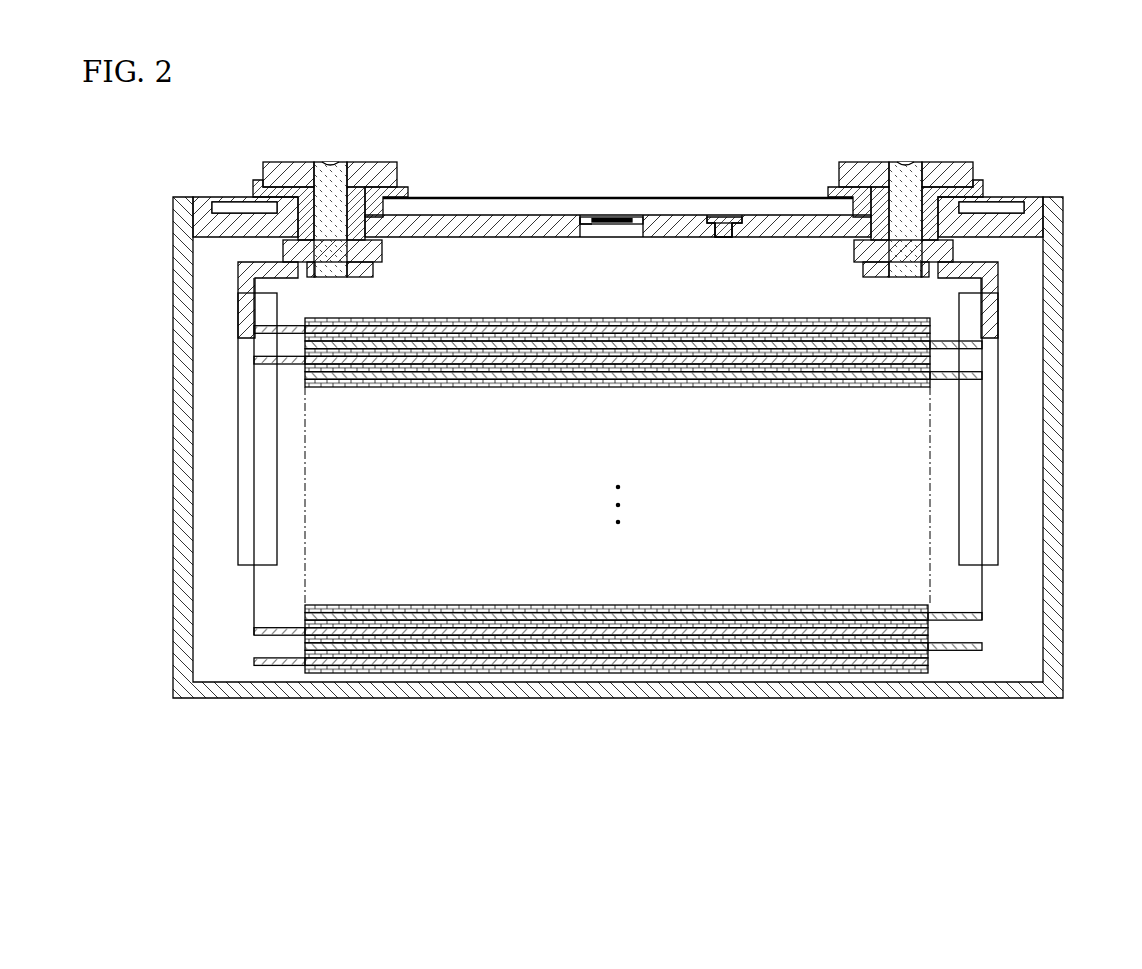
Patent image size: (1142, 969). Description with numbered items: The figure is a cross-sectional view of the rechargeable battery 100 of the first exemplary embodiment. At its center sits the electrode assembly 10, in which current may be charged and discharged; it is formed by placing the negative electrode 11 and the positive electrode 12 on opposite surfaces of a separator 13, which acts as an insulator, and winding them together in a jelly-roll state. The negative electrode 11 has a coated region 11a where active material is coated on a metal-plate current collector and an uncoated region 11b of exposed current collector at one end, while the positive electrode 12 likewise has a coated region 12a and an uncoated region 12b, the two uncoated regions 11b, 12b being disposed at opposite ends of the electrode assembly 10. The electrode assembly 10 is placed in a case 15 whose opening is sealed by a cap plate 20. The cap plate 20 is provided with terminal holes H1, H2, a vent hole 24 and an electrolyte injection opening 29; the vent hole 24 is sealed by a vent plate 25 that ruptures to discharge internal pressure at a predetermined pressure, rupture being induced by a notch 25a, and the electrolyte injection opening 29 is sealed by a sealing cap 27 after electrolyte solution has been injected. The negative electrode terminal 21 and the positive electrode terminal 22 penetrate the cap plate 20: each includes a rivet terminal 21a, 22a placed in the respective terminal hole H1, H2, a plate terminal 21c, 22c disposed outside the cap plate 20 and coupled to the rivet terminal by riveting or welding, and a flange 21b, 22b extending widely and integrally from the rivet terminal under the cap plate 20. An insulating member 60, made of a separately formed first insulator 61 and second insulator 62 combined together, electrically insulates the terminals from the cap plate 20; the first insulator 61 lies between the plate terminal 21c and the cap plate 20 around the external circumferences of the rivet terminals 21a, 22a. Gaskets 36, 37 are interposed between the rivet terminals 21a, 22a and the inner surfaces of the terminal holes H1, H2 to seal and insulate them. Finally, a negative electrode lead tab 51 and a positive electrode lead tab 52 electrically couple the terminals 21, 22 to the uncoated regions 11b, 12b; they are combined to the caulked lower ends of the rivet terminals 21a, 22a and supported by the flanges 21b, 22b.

The rechargeable battery 100 is at (615, 103).
The electrode assembly 10 is at (623, 531).
The negative electrode 11 is at (592, 531).
The coated region 11a is at (390, 667).
The uncoated region 11b is at (279, 512).
The positive electrode 12 is at (648, 531).
The coated region 12a is at (853, 652).
The uncoated region 12b is at (955, 514).
The separator 13 is at (645, 668).
The case 15 is at (1063, 418).
The cap plate 20 is at (503, 216).
The negative electrode terminal 21 is at (344, 267).
The rivet terminal 21a is at (338, 252).
The flange 21b is at (368, 255).
The plate terminal 21c is at (302, 178).
The positive electrode terminal 22 is at (882, 277).
The rivet terminal 22a is at (907, 253).
The flange 22b is at (877, 255).
The plate terminal 22c is at (963, 178).
The vent hole 24 is at (613, 217).
The vent plate 25 is at (633, 217).
The notch 25a is at (602, 215).
The sealing cap 27 is at (728, 217).
The electrolyte injection opening 29 is at (718, 217).
The gasket 36 is at (310, 230).
The gasket 37 is at (923, 228).
The negative electrode lead tab 51 is at (243, 312).
The positive electrode lead tab 52 is at (997, 312).
The insulating member 60 is at (618, 151).
The first insulator 61 is at (360, 178).
The second insulator 62 is at (355, 122).
The terminal hole H1 is at (252, 193).
The terminal hole H2 is at (983, 193).